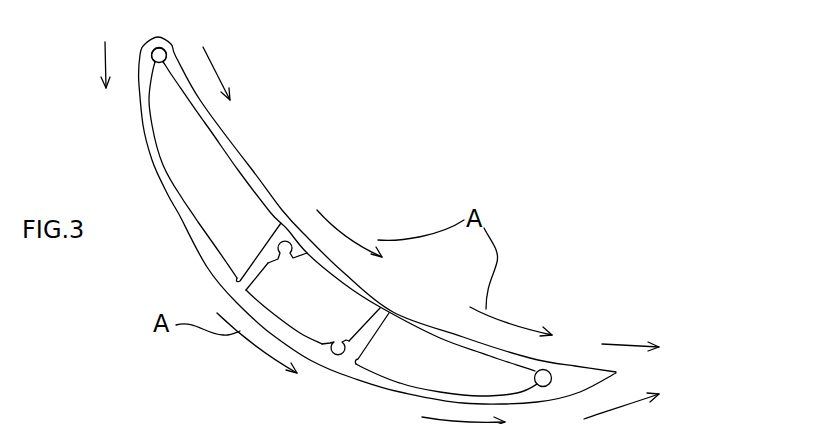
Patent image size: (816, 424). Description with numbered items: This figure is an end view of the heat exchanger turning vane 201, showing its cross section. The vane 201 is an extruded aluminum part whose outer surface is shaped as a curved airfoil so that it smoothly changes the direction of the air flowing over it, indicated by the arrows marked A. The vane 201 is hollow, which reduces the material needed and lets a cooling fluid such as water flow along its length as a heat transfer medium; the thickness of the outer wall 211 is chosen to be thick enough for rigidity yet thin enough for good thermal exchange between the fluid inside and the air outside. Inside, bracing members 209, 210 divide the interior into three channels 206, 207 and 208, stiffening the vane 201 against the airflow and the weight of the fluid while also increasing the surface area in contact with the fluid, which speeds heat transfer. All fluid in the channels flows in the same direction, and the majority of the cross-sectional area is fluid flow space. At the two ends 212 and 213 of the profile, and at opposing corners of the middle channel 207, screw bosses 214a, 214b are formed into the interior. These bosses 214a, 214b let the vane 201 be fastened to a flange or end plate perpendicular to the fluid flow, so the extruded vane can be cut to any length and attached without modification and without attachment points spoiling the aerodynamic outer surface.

The heat exchanger turning vane 201 is at (260, 170).
The channel 206 is at (245, 231).
The channel 207 is at (335, 320).
The channel 208 is at (427, 364).
The bracing member 209 is at (256, 266).
The bracing member 210 is at (386, 313).
The outer wall 211 is at (217, 123).
The end 212 is at (154, 37).
The end 213 is at (617, 373).
The screw boss 214a is at (153, 57).
The screw boss 214b is at (343, 355).